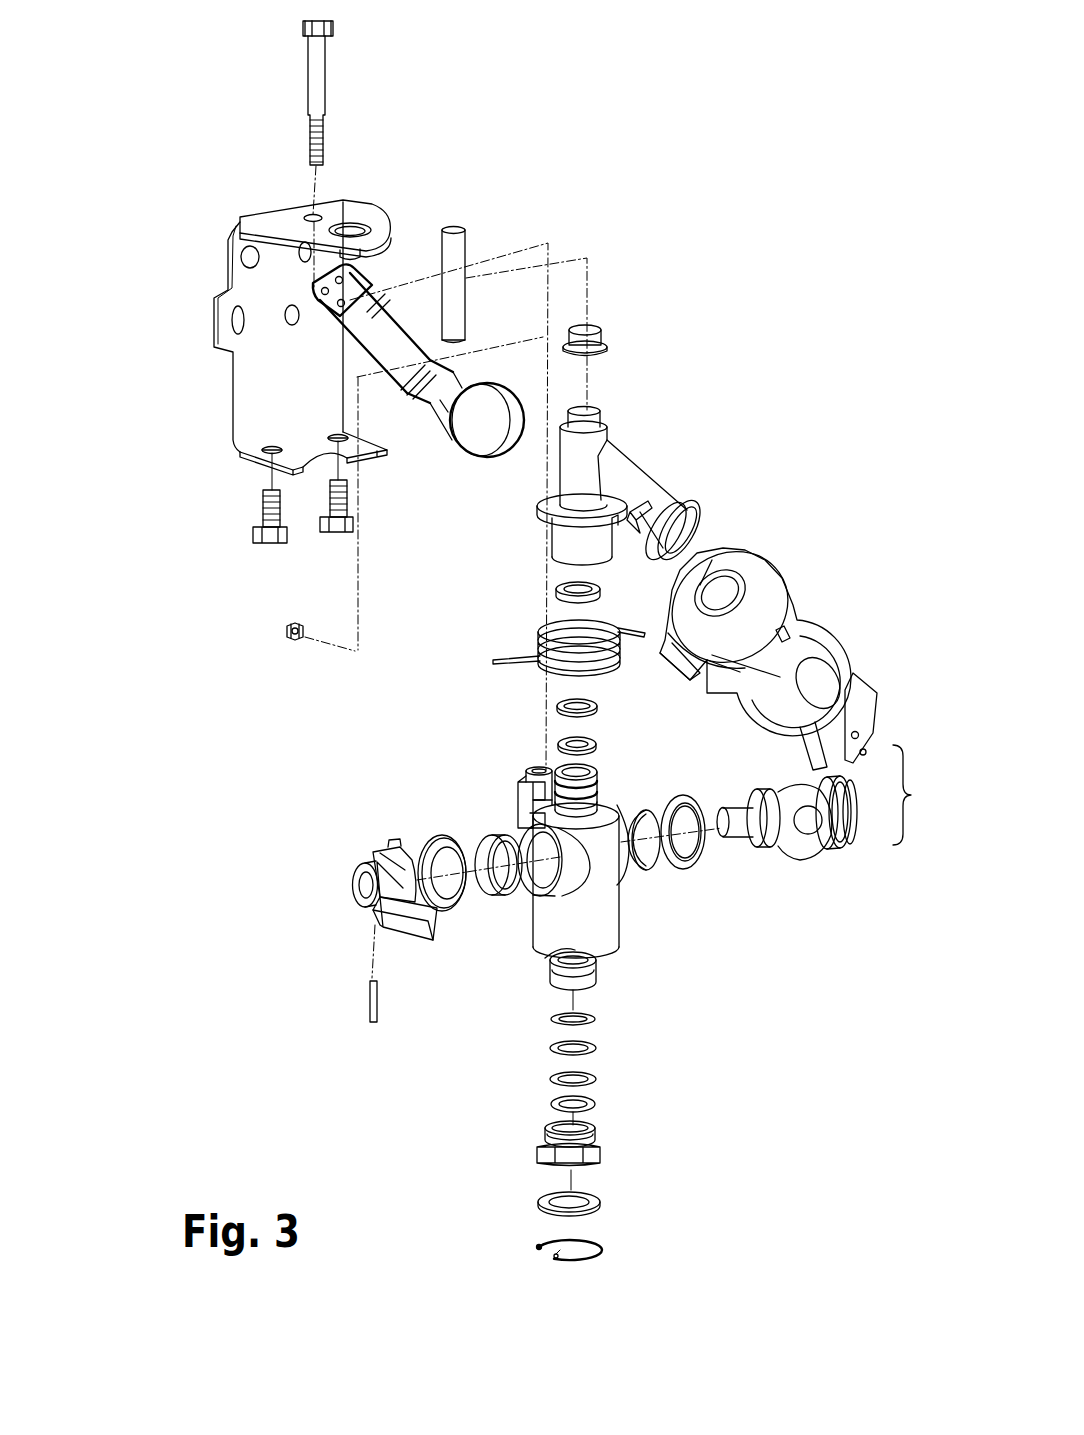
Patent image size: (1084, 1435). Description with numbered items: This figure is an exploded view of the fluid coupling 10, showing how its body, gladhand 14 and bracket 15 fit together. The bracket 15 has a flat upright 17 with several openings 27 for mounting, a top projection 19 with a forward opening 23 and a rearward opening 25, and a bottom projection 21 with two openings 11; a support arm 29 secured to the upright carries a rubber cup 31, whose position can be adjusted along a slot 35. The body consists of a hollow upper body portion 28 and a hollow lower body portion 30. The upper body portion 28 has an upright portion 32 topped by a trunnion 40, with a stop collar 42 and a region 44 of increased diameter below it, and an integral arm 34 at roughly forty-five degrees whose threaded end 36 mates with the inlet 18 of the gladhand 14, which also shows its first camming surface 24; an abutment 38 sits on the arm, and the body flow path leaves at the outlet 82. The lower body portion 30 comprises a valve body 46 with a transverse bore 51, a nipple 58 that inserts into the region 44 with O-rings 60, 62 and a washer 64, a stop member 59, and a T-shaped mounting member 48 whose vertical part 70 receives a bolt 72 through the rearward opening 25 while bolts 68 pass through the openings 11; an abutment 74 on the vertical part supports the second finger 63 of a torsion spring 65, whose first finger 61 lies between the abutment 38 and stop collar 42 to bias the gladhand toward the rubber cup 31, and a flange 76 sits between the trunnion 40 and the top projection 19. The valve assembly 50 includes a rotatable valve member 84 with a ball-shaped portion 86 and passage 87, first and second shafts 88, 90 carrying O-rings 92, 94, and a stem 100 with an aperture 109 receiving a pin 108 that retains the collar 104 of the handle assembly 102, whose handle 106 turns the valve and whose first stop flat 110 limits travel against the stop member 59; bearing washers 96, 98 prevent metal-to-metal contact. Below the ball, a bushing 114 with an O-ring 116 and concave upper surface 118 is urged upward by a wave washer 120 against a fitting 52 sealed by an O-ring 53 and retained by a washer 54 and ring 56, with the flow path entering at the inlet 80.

The fluid coupling 10 is at (662, 193).
The openings 11 is at (337, 433).
The gladhand 14 is at (779, 622).
The bracket 15 is at (279, 316).
The flat upright 17 is at (240, 327).
The inlet 18 is at (730, 582).
The top projection 19 is at (327, 185).
The bottom projection 21 is at (381, 456).
The forward opening 23 is at (354, 228).
The first camming surface 24 is at (865, 702).
The rearward opening 25 is at (305, 212).
The openings 27 is at (241, 258).
The upper body portion 28 is at (611, 477).
The support arm 29 is at (418, 402).
The lower body portion 30 is at (572, 836).
The rubber cup 31 is at (468, 428).
The upright portion 32 is at (568, 463).
The arm 34 is at (674, 492).
The slot 35 is at (430, 398).
The threaded end 36 is at (684, 522).
The abutment 38 is at (632, 525).
The trunnion 40 is at (593, 422).
The stop collar 42 is at (550, 510).
The region of increased outer diameter 44 is at (568, 548).
The valve body 46 is at (604, 904).
The mounting member 48 is at (537, 768).
The valve assembly 50 is at (817, 838).
The transverse bore 51 is at (542, 872).
The fitting 52 is at (540, 1152).
The O-ring 53 is at (552, 1103).
The washer 54 is at (544, 1203).
The ring 56 is at (538, 1246).
The nipple 58 is at (600, 774).
The stop member 59 is at (525, 826).
The O-ring 60 is at (597, 742).
The first finger 61 is at (642, 634).
The O-ring 62 is at (598, 705).
The second finger 63 is at (493, 662).
The washer 64 is at (562, 594).
The torsion spring 65 is at (539, 636).
The bolt 68 is at (262, 536).
The vertical part 70 is at (530, 790).
The bolt 72 is at (316, 86).
The abutment 74 is at (503, 754).
The flange 76 is at (608, 330).
The inlet 80 is at (556, 1254).
The outlet 82 is at (703, 578).
The rotatable valve member 84 is at (853, 855).
The ball-shaped portion 86 is at (807, 857).
The passage 87 is at (810, 834).
The first shaft 88 is at (840, 806).
The second shaft 90 is at (764, 845).
The O-ring 92 is at (645, 810).
The O-ring 94 is at (488, 892).
The bearing washer 96 is at (683, 797).
The bearing washer 98 is at (441, 836).
The stem 100 is at (735, 838).
The handle assembly 102 is at (345, 889).
The collar 104 is at (355, 881).
The handle 106 is at (412, 938).
The pin 108 is at (369, 1002).
The aperture 109 is at (745, 825).
The first stop flat 110 is at (392, 840).
The bushing 114 is at (598, 968).
The O-ring 116 is at (551, 1019).
The concave upper surface 118 is at (548, 958).
The wave washer 120 is at (550, 1047).